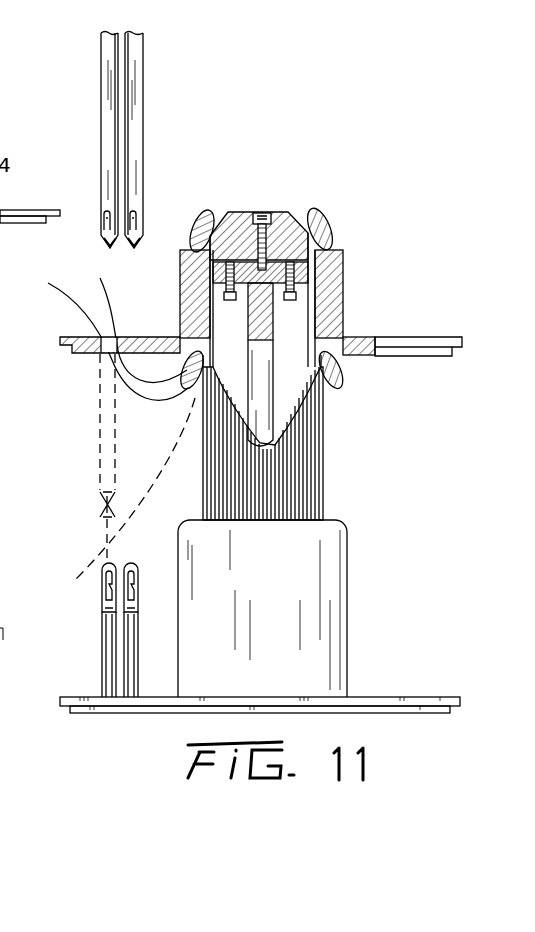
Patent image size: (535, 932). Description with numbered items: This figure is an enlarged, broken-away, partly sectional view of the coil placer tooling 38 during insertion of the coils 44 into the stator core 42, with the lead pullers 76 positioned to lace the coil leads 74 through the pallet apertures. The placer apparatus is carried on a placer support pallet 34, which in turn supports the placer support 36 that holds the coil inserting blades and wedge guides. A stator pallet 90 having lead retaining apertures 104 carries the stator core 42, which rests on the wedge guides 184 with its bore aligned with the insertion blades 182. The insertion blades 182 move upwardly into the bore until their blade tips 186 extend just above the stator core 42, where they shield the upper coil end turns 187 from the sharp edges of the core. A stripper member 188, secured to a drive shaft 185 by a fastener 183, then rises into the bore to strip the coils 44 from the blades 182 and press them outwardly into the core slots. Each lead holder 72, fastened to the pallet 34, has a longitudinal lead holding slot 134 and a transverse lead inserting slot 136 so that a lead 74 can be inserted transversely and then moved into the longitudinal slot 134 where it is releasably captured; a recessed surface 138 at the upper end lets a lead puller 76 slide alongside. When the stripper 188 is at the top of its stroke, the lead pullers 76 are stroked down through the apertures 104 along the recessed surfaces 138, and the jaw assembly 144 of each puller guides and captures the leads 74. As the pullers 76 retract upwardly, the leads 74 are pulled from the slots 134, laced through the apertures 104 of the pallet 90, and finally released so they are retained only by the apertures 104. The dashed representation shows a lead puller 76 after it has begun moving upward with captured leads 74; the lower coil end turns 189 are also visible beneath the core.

The placer support pallet 34 is at (392, 697).
The placer support 36 is at (318, 626).
The coil placer tooling 38 is at (375, 412).
The stator core 42 is at (345, 278).
The coils 44 is at (336, 200).
The lead holder 72 is at (130, 656).
The coil leads 74 is at (100, 288).
The lead puller 76 is at (108, 150).
The stator pallet 90 is at (398, 337).
The lead retaining apertures 104 is at (95, 355).
The longitudinal lead holding slot 134 is at (130, 565).
The transverse lead inserting slot 136 is at (140, 584).
The recessed surface 138 is at (102, 596).
The jaw assembly 144 is at (134, 222).
The insertion blades 182 is at (180, 288).
The fastener 183 is at (262, 212).
The wedge guides 184 is at (300, 480).
The drive shaft 185 is at (260, 398).
The blade tips 186 is at (228, 212).
The upper coil end turns 187 is at (338, 232).
The stripper member 188 is at (293, 212).
The coil end turns 189 is at (340, 366).